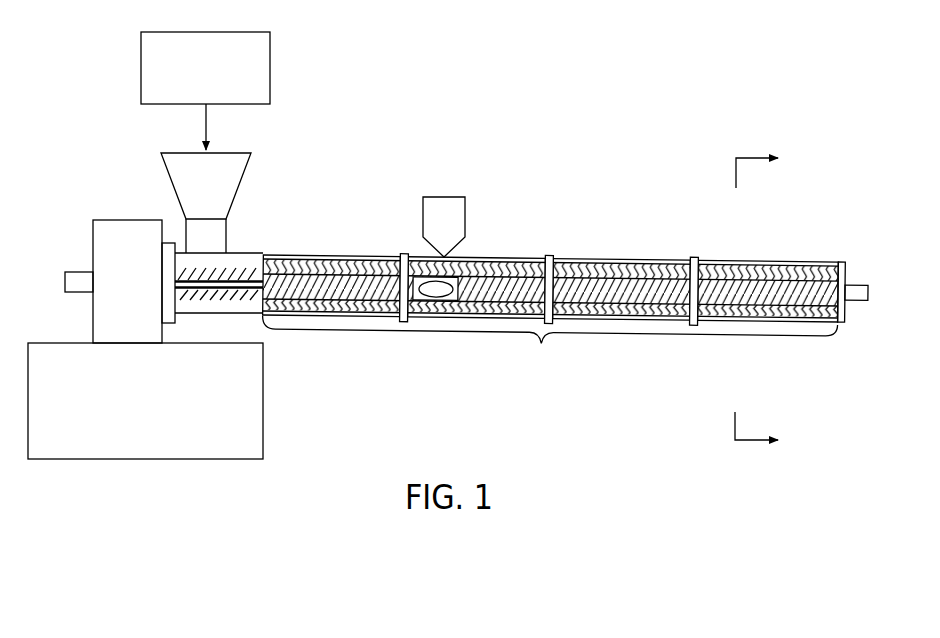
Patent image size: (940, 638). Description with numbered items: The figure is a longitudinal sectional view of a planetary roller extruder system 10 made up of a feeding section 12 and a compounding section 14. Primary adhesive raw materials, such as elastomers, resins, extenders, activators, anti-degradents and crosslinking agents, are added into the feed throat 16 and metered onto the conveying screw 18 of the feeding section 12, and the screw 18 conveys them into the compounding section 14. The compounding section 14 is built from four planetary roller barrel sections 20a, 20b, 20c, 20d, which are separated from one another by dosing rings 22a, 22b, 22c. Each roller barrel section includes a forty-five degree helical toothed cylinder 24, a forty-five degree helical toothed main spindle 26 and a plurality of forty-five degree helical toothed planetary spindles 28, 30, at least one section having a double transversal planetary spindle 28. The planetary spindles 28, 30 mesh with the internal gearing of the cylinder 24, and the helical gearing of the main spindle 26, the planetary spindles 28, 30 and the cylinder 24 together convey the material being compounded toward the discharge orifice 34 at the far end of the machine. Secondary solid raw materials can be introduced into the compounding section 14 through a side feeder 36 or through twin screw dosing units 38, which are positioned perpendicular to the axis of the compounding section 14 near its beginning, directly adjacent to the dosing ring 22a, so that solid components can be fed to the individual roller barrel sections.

The planetary roller extruder system 10 is at (654, 138).
The feeding section 12 is at (216, 318).
The compounding section 14 is at (553, 313).
The feed throat 16 is at (193, 199).
The conveying screw 18 is at (240, 272).
The planetary roller barrel section 20a is at (338, 318).
The planetary roller barrel section 20b is at (496, 321).
The planetary roller barrel section 20c is at (632, 323).
The planetary roller barrel section 20d is at (760, 323).
The dosing ring 22a is at (403, 253).
The dosing ring 22b is at (548, 252).
The dosing ring 22c is at (692, 253).
The helical toothed cylinder 24 is at (668, 325).
The helical toothed main spindle 26 is at (752, 270).
The double transversal planetary spindle 28 is at (805, 268).
The planetary spindle 30 is at (815, 311).
The discharge orifice 34 is at (870, 291).
The side feeder 36 is at (420, 292).
The twin screw dosing unit 38 is at (432, 231).